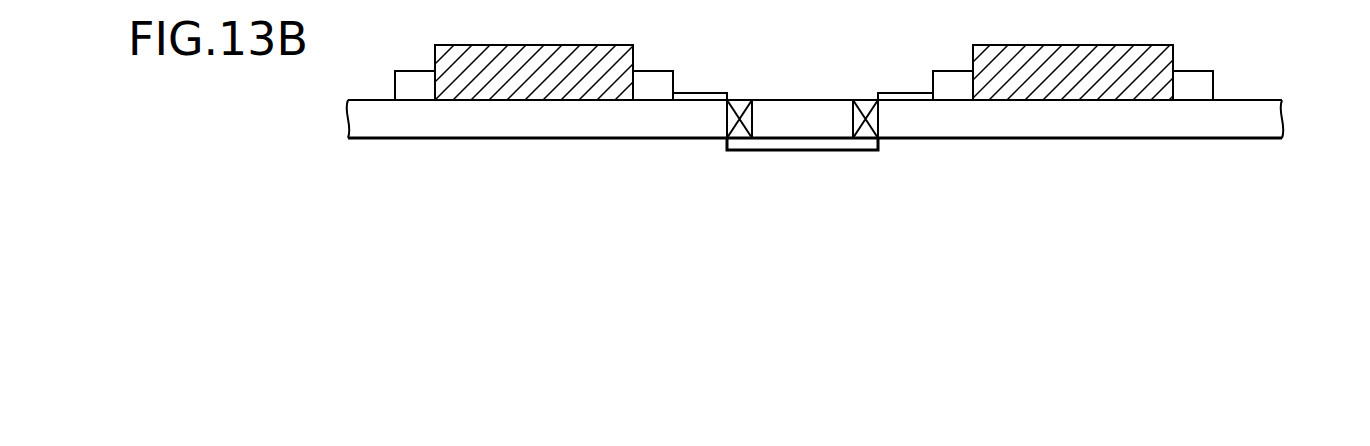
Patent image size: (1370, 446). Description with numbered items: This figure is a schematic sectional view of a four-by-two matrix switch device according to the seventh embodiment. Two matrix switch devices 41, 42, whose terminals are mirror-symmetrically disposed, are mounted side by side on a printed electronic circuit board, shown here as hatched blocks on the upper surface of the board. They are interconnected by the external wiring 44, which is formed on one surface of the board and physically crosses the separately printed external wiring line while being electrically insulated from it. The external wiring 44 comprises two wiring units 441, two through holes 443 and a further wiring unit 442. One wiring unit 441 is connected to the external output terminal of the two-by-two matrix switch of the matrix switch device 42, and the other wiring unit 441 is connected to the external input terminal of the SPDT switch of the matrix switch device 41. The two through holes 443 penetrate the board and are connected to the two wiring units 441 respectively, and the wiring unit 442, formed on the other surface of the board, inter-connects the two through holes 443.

The matrix switch device 41 is at (1090, 100).
The matrix switch device 42 is at (518, 92).
The external wiring 44 is at (789, 212).
The wiring unit 441 is at (693, 97).
The wiring unit 442 is at (802, 193).
The through hole 443 is at (733, 118).